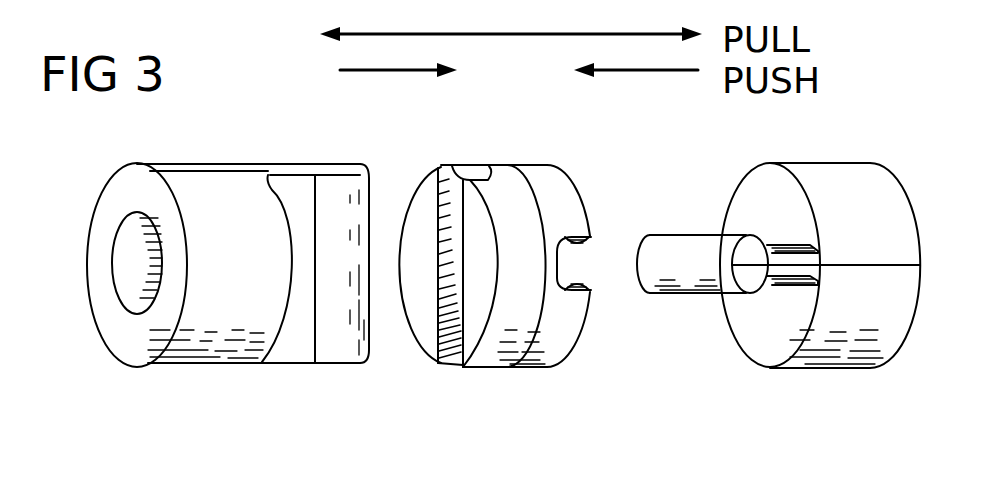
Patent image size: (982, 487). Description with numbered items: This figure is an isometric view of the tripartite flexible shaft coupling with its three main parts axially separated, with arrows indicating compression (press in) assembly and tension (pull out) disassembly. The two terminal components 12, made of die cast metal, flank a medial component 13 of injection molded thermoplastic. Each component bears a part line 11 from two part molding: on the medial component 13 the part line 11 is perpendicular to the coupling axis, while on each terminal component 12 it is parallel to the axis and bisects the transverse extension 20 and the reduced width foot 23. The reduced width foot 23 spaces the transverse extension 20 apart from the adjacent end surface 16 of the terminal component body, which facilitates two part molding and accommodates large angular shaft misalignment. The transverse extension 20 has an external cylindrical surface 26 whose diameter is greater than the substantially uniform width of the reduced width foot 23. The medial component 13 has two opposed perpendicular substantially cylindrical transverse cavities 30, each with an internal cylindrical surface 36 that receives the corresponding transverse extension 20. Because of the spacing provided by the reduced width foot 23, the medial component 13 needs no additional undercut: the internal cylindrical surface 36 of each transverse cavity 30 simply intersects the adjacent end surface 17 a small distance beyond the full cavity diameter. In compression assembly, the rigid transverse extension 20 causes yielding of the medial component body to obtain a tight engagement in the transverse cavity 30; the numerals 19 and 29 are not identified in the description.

The part line 11 is at (247, 164).
The terminal component 12 is at (278, 142).
The medial component 13 is at (497, 378).
The end surface 16 is at (733, 320).
The end surface 17 is at (427, 345).
The outer sleeve flange 19 is at (132, 353).
The transverse extension 20 is at (350, 142).
The reduced width foot 23 is at (290, 367).
The external cylindrical surface 26 is at (339, 352).
The bore 29 is at (128, 296).
The transverse cavity 30 is at (453, 172).
The internal cylindrical surface 36 is at (462, 170).